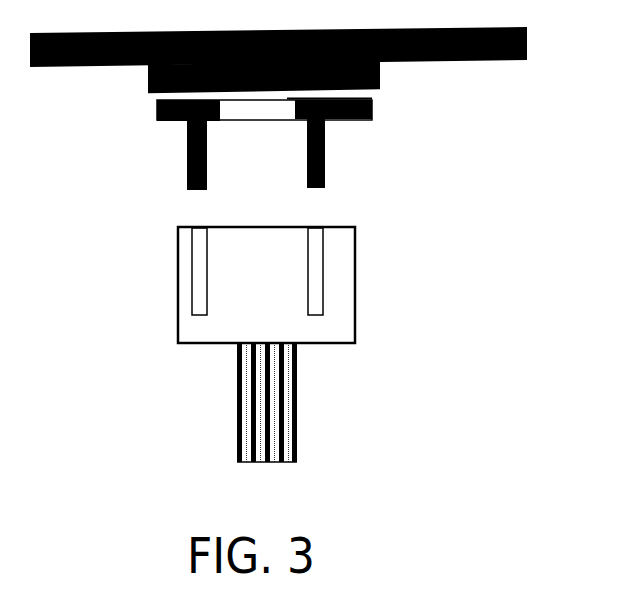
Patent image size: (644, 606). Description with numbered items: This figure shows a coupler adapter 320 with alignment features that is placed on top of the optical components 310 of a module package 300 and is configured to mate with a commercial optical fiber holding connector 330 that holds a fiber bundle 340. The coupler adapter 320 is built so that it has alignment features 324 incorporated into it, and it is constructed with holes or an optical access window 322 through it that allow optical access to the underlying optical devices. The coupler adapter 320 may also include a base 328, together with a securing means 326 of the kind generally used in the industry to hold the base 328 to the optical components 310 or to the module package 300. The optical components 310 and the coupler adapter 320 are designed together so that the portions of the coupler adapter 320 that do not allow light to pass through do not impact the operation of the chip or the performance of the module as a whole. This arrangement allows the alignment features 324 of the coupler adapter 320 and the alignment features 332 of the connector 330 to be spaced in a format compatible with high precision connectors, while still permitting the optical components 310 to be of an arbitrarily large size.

The module package 300 is at (550, 70).
The optical components 310 is at (124, 103).
The securing means 326 is at (355, 97).
The coupler adapter 320 is at (376, 133).
The base 328 is at (163, 125).
The optical access window 322 is at (214, 152).
The alignment features 324 is at (327, 162).
The optical fiber holding connector 330 is at (382, 305).
The alignment features of connector 332 is at (174, 310).
The fiber bundle 340 is at (323, 410).